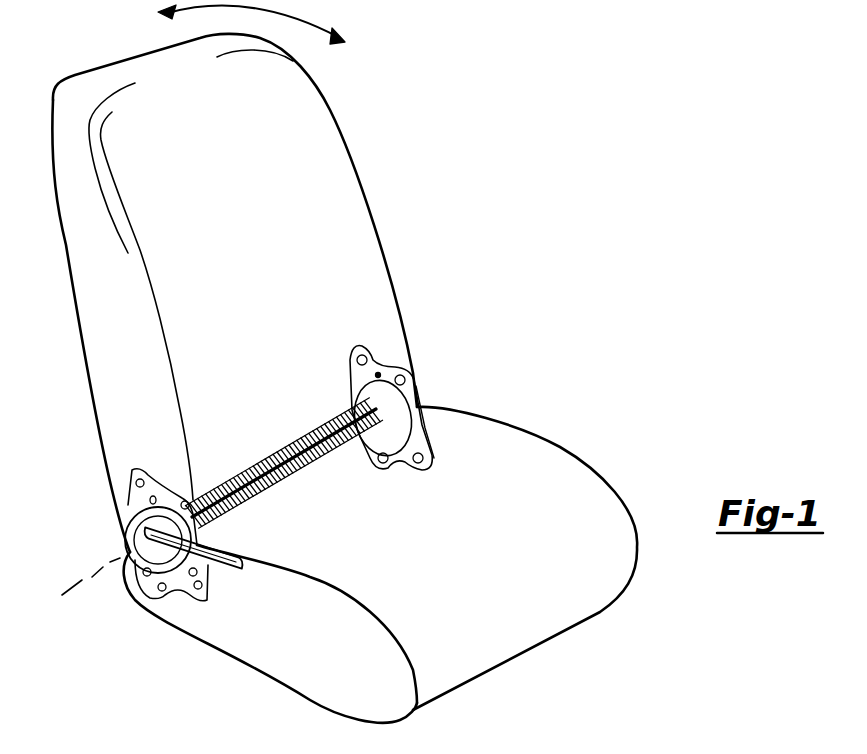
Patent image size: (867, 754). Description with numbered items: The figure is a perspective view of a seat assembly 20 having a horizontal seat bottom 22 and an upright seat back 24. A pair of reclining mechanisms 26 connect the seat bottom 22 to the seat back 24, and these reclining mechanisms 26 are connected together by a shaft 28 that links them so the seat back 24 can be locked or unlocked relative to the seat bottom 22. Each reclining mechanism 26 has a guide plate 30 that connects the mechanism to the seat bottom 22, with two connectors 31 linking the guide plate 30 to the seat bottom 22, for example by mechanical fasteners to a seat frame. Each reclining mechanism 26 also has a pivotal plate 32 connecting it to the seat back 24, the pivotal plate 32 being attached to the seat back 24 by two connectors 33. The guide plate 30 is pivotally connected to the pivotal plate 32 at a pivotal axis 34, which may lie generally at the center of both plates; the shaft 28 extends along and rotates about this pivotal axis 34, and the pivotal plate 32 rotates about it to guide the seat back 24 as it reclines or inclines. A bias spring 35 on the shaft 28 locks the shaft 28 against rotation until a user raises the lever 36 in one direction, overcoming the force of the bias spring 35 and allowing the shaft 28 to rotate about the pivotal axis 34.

The seat assembly 20 is at (516, 162).
The seat bottom 22 is at (287, 668).
The seat back 24 is at (372, 196).
The reclining mechanisms 26 is at (432, 379).
The shaft 28 is at (298, 442).
The guide plate 30 is at (173, 598).
The connectors 31 is at (140, 587).
The pivotal plate 32 is at (130, 502).
The connectors 33 is at (137, 475).
The pivotal axis 34 is at (82, 585).
The bias spring 35 is at (349, 452).
The lever 36 is at (247, 580).